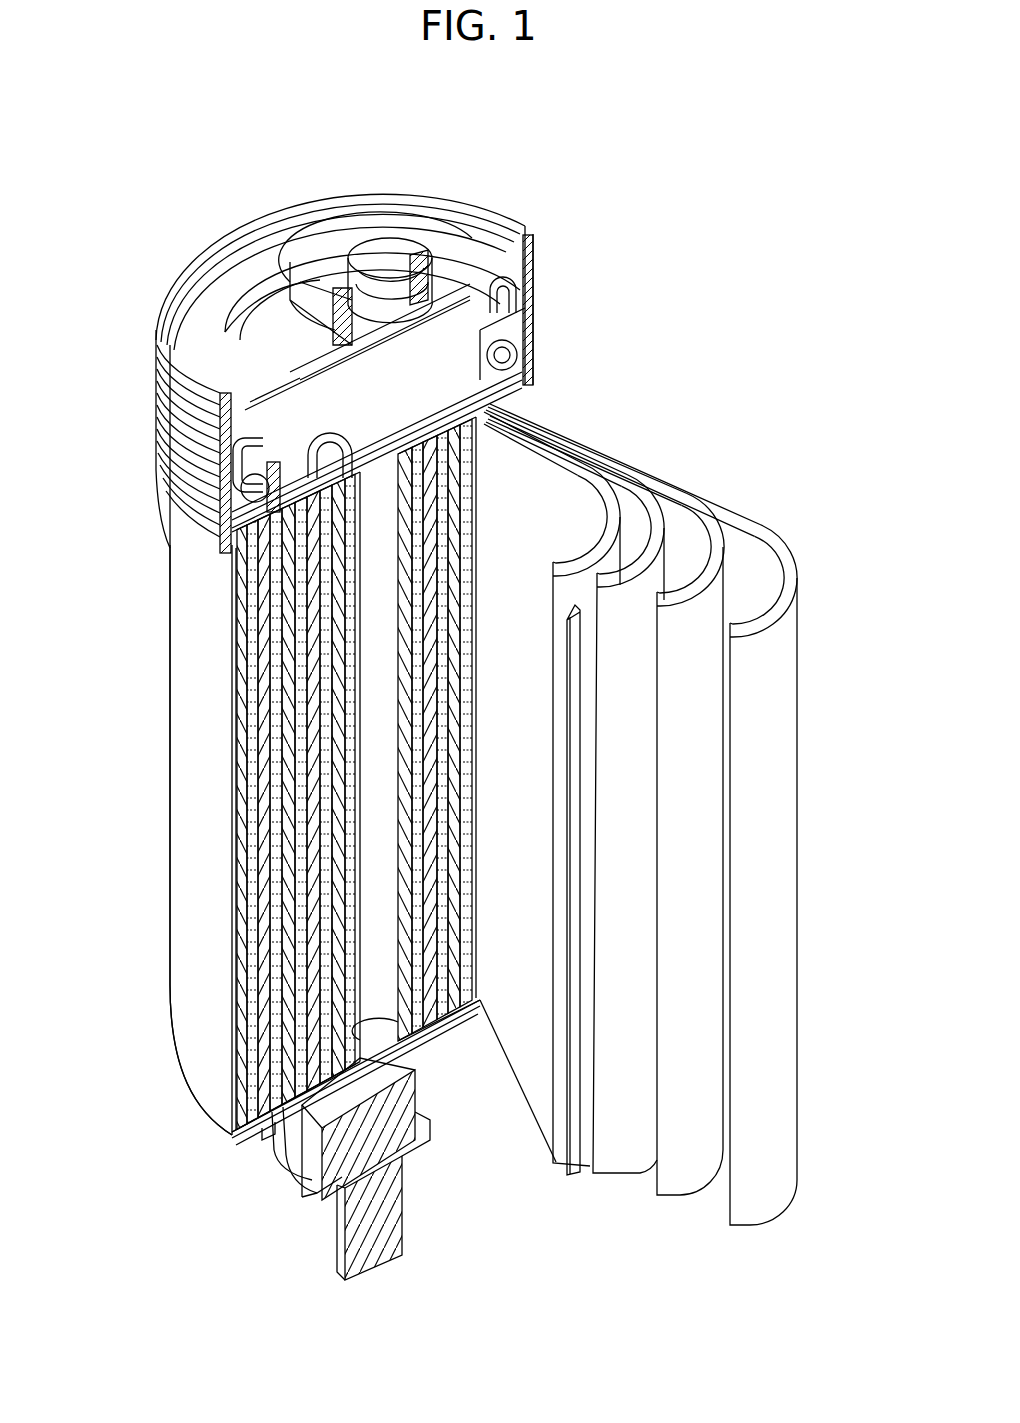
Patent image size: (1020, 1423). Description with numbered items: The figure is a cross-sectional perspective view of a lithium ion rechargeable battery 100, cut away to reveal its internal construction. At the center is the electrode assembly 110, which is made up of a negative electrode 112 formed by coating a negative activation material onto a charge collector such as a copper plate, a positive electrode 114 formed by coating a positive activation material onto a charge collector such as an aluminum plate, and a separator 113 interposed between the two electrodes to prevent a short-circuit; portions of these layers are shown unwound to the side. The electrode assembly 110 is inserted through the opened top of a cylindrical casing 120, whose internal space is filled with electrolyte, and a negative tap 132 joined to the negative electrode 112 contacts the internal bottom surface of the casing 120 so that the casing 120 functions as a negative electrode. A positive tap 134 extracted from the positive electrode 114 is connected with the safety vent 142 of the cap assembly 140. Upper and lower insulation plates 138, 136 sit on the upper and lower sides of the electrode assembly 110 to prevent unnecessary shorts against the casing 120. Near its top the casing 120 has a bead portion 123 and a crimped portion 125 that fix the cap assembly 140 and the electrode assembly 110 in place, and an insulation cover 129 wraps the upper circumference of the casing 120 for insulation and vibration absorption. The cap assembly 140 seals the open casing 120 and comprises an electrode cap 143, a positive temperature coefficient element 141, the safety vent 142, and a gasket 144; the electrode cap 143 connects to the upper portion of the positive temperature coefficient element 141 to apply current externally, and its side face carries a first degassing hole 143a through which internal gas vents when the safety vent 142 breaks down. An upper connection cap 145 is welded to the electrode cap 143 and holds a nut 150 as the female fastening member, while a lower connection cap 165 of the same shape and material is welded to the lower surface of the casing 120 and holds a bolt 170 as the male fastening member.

The rechargeable battery 100 is at (500, 91).
The electrode assembly 110 is at (722, 1314).
The negative electrode 112 is at (578, 1165).
The separator 113 is at (640, 1170).
The positive electrode 114 is at (685, 1188).
The casing 120 is at (166, 690).
The bead portion 123 is at (165, 500).
The crimped portion 125 is at (200, 436).
The insulation cover 129 is at (158, 345).
The negative tap 132 is at (575, 1103).
The positive tap 134 is at (525, 418).
The lower insulation plate 136 is at (257, 1130).
The upper insulation plate 138 is at (230, 535).
The cap assembly 140 is at (462, 186).
The positive temperature coefficient element 141 is at (527, 296).
The safety vent 142 is at (530, 319).
The electrode cap 143 is at (508, 270).
The first degassing hole 143a is at (250, 380).
The gasket 144 is at (530, 382).
The upper connection cap 145 is at (278, 311).
The nut 150 is at (432, 258).
The lower connection cap 165 is at (303, 1208).
The bolt 170 is at (395, 1198).